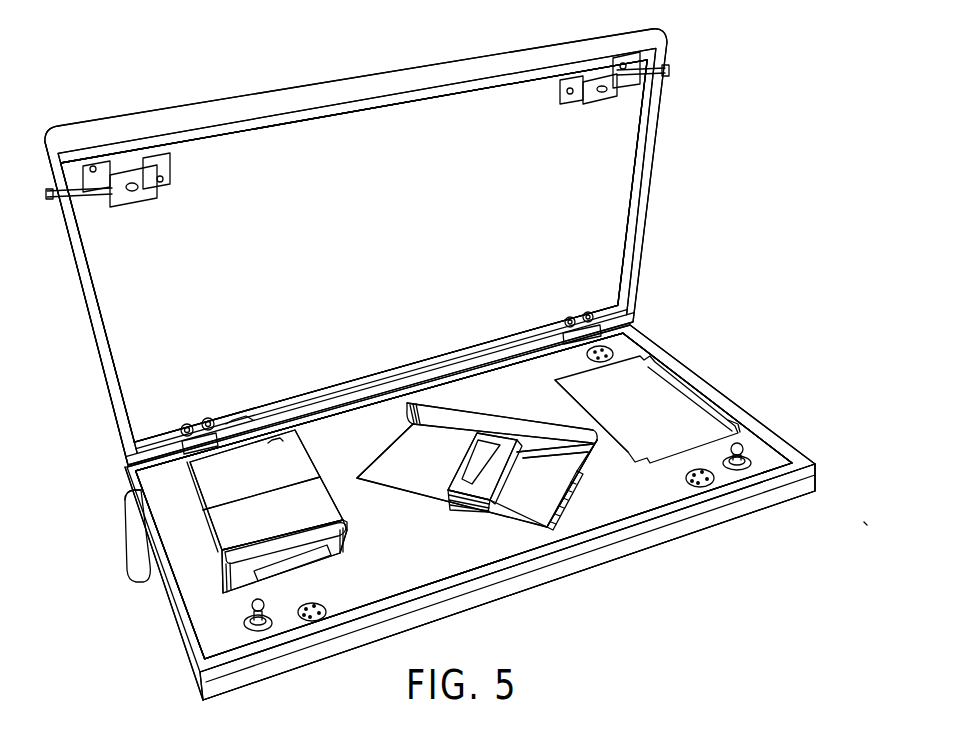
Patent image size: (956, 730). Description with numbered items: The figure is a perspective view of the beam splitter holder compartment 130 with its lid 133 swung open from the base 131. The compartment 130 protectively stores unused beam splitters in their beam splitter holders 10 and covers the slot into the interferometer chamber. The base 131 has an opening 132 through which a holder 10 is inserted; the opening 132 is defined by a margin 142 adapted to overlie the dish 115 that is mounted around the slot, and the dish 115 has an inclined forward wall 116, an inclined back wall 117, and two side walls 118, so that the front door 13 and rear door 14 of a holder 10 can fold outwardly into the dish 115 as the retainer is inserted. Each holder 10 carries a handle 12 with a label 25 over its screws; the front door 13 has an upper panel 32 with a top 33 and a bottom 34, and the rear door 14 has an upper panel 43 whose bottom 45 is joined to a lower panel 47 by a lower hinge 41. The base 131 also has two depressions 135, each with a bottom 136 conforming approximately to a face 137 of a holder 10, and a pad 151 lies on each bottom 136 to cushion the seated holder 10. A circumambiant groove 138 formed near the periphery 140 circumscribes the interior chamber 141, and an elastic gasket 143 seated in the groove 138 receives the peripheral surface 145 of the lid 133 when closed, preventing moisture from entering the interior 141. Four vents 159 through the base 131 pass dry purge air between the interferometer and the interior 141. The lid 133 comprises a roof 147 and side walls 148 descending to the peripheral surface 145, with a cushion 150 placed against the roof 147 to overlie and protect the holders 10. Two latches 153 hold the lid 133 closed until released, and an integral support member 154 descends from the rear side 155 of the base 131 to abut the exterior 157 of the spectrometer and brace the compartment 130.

The beam splitter holder 10 is at (338, 566).
The handle 12 is at (245, 590).
The front door 13 is at (552, 502).
The rear door 14 is at (435, 495).
The label 25 is at (307, 560).
The upper panel 32 is at (557, 475).
The top 33 is at (490, 470).
The bottom 34 is at (577, 473).
The lower hinge 41 is at (560, 520).
The upper panel 43 is at (277, 530).
The bottom 45 is at (417, 450).
The lower panel 47 is at (267, 484).
The dish 115 is at (527, 453).
The forward wall 116 is at (575, 458).
The back wall 117 is at (390, 470).
The side walls 118 is at (543, 447).
The beam splitter holder compartment 130 is at (382, 60).
The base 131 is at (728, 380).
The opening 132 is at (527, 527).
The lid 133 is at (353, 82).
The depressions 135 is at (708, 380).
The bottom 136 is at (733, 440).
The face 137 is at (312, 497).
The circumambiant groove 138 is at (650, 337).
The periphery 140 is at (730, 397).
The interior chamber 141 is at (607, 212).
The margin 142 is at (440, 403).
The elastic gasket 143 is at (352, 403).
The peripheral surface 145 is at (443, 92).
The roof 147 is at (330, 148).
The side walls 148 is at (262, 100).
The cushion 150 is at (237, 165).
The pads 151 is at (133, 508).
The latches 153 is at (600, 103).
The integral support member 154 is at (133, 550).
The rear side 155 is at (310, 440).
The exterior 157 is at (379, 531).
The vents 159 is at (595, 356).